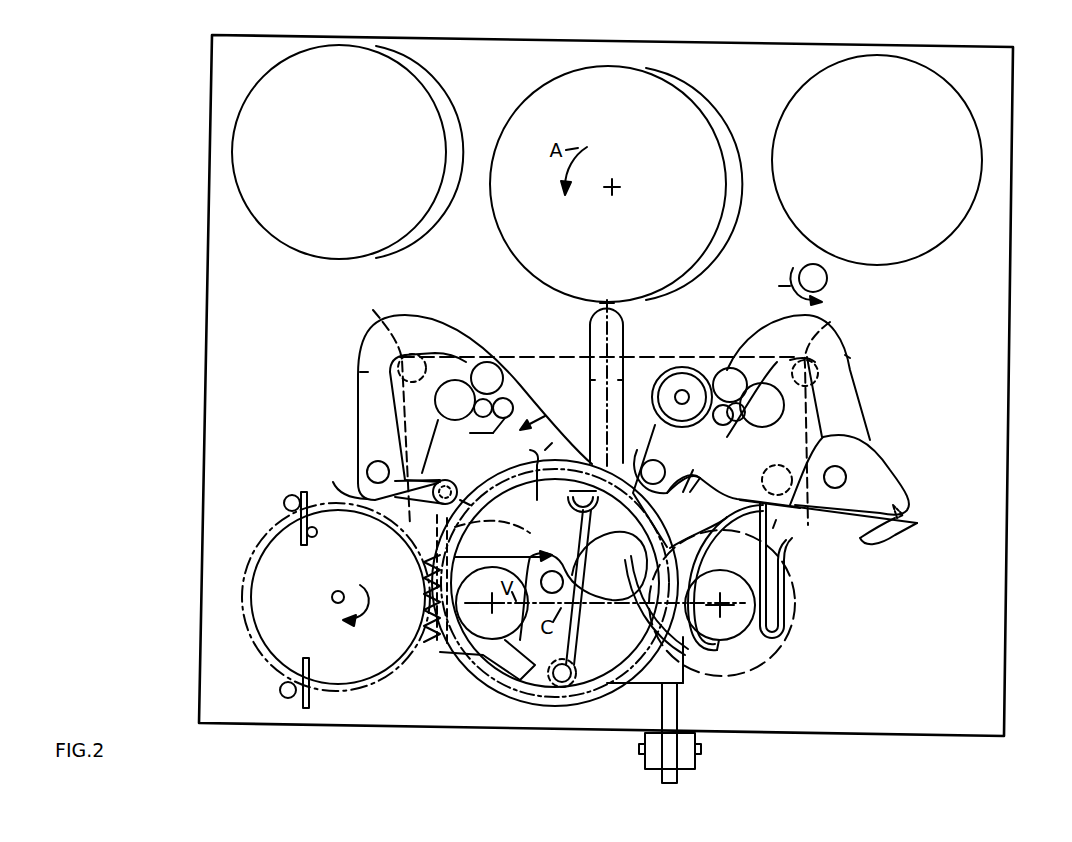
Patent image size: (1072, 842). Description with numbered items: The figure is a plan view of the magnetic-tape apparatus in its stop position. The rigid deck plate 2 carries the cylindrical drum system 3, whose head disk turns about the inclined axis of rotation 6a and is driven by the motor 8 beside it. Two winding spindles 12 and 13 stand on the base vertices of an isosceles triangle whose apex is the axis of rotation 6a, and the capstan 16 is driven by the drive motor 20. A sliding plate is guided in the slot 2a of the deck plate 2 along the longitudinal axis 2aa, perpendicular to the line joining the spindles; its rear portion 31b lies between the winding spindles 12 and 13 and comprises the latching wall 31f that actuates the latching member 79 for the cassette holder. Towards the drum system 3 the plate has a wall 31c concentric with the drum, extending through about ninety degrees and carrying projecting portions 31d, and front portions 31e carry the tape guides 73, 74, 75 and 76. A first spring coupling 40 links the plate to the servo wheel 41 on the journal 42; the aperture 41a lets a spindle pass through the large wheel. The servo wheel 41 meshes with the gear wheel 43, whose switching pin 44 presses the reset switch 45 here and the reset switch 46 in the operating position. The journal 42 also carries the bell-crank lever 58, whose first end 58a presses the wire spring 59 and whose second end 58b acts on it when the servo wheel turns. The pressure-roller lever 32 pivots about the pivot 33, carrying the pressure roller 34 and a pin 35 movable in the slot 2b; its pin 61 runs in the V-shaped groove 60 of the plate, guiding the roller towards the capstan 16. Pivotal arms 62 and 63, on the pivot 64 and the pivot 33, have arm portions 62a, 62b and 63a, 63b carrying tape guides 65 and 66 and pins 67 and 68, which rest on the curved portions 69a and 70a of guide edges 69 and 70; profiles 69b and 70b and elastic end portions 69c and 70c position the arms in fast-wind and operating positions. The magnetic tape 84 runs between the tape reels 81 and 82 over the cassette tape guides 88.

The deck plate 2 is at (992, 308).
The slot 2a is at (590, 378).
The longitudinal axis of the slot 2aa is at (614, 340).
The slot 2b is at (868, 545).
The drum system 3 is at (718, 99).
The axis of rotation 6a is at (618, 193).
The motor 8 is at (418, 120).
The winding spindle 12 is at (483, 614).
The winding spindle 13 is at (737, 628).
The capstan 16 is at (820, 280).
The drive motor 20 is at (948, 222).
The rear portion of the sliding plate 31b is at (688, 677).
The wall 31c is at (564, 438).
The projecting portions 31d is at (547, 415).
The front portions 31e is at (493, 433).
The latching wall 31f is at (654, 690).
The pressure-roller lever 32 is at (887, 478).
The pivot 33 is at (840, 468).
The pressure roller 34 is at (684, 376).
The pin 35 is at (903, 510).
The first spring coupling 40 is at (594, 556).
The servo wheel 41 is at (601, 680).
The aperture 41a is at (517, 468).
The journal 42 is at (553, 572).
The gear wheel 43 is at (376, 652).
The switching pin 44 is at (317, 532).
The reset switch 45 is at (284, 501).
The reset switch 46 is at (280, 690).
The bell-crank lever 58 is at (602, 618).
The first end 58a is at (630, 622).
The second end 58b is at (540, 705).
The wire spring 59 is at (774, 528).
The V-shaped groove 60 is at (775, 497).
The pin 61 is at (653, 460).
The pivotal arm 62 is at (357, 399).
The arm portion 62a is at (330, 478).
The arm portion 62b is at (366, 371).
The pivotal arm 63 is at (851, 393).
The arm portion 63a is at (798, 512).
The arm portion 63b is at (843, 357).
The pivot 64 is at (378, 462).
The tape guide 65 is at (489, 363).
The tape guide 66 is at (730, 368).
The pin 67 is at (463, 499).
The pin 68 is at (768, 473).
The guide edge 69 is at (445, 506).
The cylindrically curved portion 69a is at (448, 486).
The profile 69b is at (503, 541).
The end portion 69c is at (428, 640).
The guide edge 70 is at (777, 578).
The cylindrically curved portion 70a is at (763, 488).
The profile 70b is at (776, 585).
The end portion 70c is at (793, 630).
The tape guide 73 is at (455, 400).
The tape guide 74 is at (506, 398).
The tape guide 75 is at (720, 417).
The tape guide 76 is at (766, 405).
The latching member 79 is at (688, 770).
The tape reel 81 is at (497, 670).
The tape reel 82 is at (773, 653).
The magnetic tape 84 is at (540, 355).
The tape guides 88 is at (383, 318).